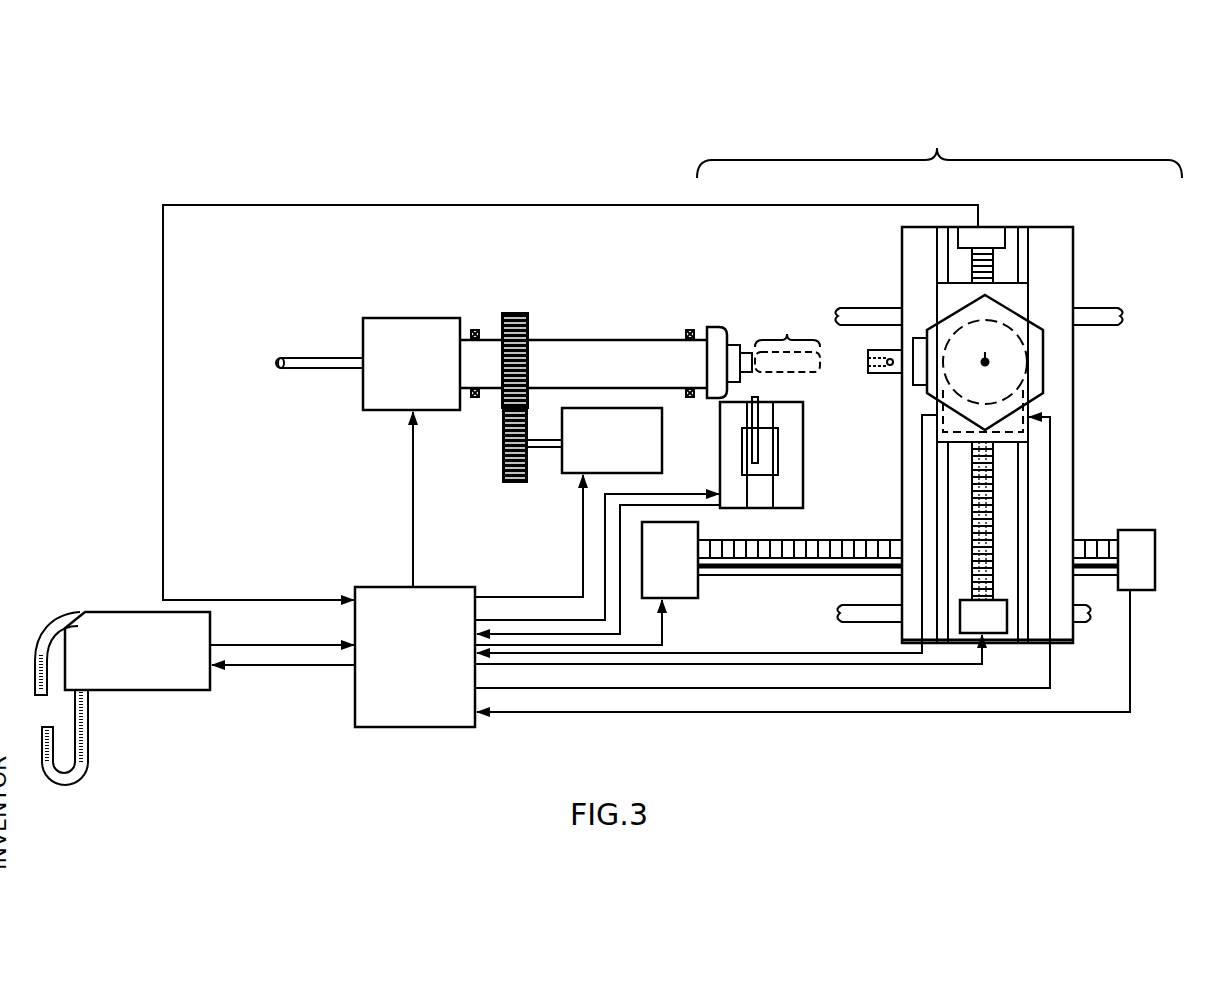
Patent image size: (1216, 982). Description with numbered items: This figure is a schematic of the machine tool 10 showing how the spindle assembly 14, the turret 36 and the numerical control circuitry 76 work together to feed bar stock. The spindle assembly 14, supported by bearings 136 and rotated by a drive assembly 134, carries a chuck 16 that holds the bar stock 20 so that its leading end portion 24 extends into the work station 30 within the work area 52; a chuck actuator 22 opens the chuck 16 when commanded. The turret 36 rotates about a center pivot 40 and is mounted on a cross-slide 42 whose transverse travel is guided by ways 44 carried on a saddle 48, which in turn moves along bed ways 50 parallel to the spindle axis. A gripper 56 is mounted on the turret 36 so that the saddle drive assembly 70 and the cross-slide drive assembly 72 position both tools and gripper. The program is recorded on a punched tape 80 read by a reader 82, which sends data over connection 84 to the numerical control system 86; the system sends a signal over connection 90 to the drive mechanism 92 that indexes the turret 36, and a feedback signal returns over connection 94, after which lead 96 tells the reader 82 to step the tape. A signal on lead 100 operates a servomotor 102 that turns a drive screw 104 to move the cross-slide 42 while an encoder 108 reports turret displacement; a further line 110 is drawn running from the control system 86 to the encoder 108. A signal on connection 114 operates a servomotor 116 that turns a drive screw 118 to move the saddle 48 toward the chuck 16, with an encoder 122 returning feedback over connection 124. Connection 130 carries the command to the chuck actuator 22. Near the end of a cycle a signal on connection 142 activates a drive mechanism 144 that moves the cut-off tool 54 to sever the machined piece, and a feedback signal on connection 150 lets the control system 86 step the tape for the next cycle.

The machine tool 10 is at (1097, 86).
The spindle assembly 14 is at (619, 332).
The chuck 16 is at (735, 345).
The bar stock 20 is at (327, 358).
The chuck actuator 22 is at (414, 318).
The leading end portion 24 is at (812, 380).
The work station 30 is at (787, 329).
The turret 36 is at (1043, 368).
The center pivot 40 is at (982, 346).
The cross-slide 42 is at (1026, 437).
The ways 44 is at (940, 470).
The saddle 48 is at (1073, 245).
The bed ways 50 is at (887, 300).
The work area 52 is at (939, 148).
The cut-off tool 54 is at (803, 432).
The gripper 56 is at (880, 375).
The drive assembly 70 is at (858, 532).
The drive assembly 72 is at (1002, 535).
The numerical control circuitry 76 is at (300, 740).
The punched tape 80 is at (60, 718).
The reader 82 is at (145, 592).
The connection 84 is at (303, 622).
The numerical control system 86 is at (388, 586).
The connection 90 is at (1050, 688).
The drive mechanism 92 is at (1020, 383).
The connection 94 is at (800, 648).
The lead 96 is at (305, 668).
The lead 100 is at (903, 666).
The servomotor 102 is at (990, 636).
The drive screw 104 is at (994, 556).
The encoder 108 is at (990, 238).
The control line 110 is at (578, 204).
The connection 114 is at (664, 628).
The servomotor 116 is at (682, 570).
The drive screw 118 is at (828, 528).
The encoder 122 is at (1150, 538).
The connection 124 is at (1130, 660).
The connection 130 is at (416, 503).
The drive assembly 134 is at (638, 408).
The bearings 136 is at (476, 329).
The connection 142 is at (656, 492).
The drive mechanism 144 is at (720, 418).
The connection 150 is at (708, 512).